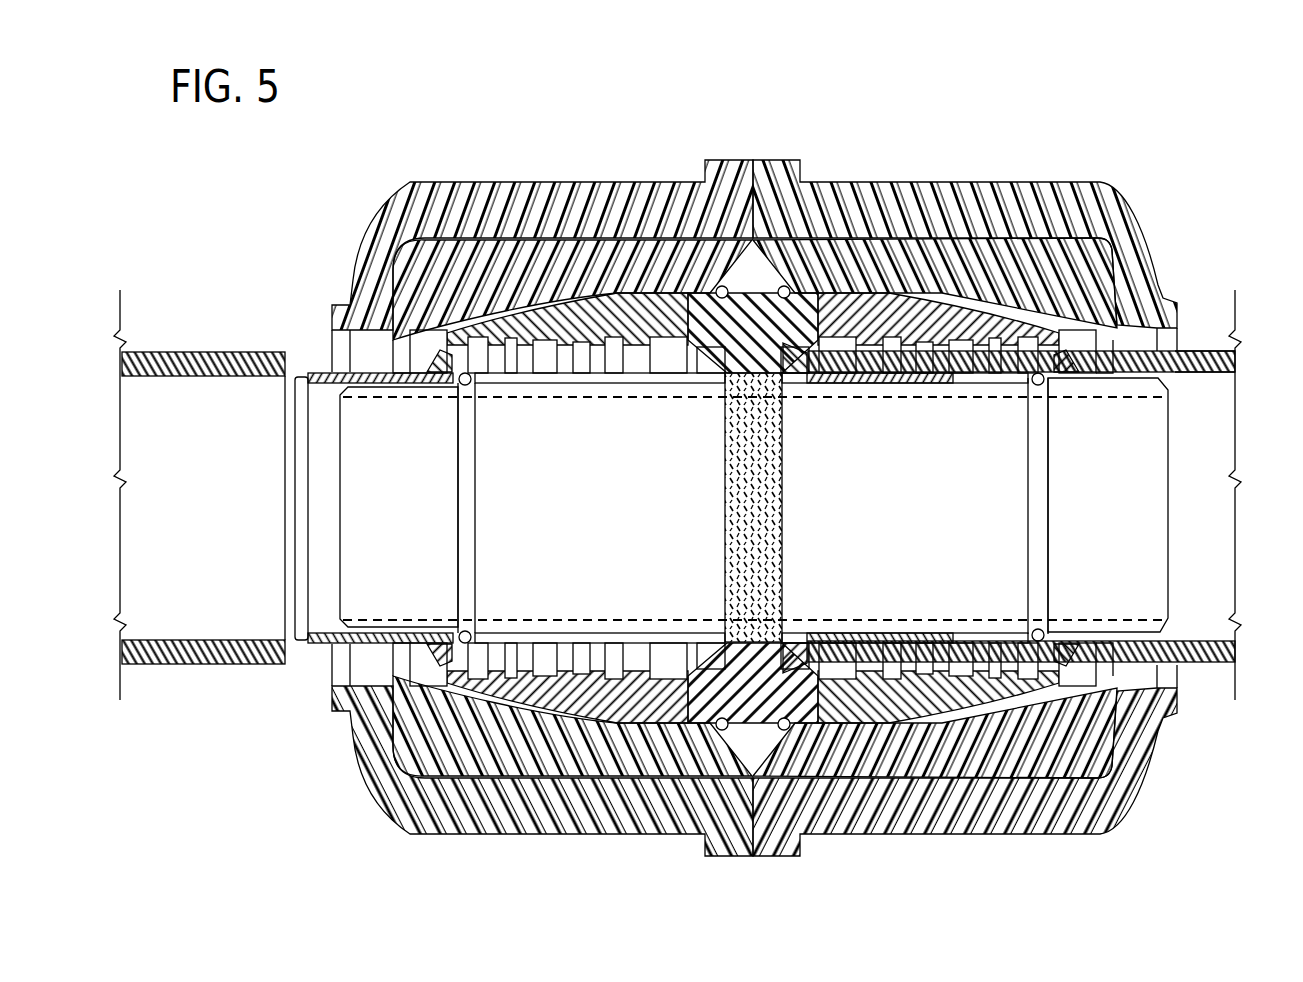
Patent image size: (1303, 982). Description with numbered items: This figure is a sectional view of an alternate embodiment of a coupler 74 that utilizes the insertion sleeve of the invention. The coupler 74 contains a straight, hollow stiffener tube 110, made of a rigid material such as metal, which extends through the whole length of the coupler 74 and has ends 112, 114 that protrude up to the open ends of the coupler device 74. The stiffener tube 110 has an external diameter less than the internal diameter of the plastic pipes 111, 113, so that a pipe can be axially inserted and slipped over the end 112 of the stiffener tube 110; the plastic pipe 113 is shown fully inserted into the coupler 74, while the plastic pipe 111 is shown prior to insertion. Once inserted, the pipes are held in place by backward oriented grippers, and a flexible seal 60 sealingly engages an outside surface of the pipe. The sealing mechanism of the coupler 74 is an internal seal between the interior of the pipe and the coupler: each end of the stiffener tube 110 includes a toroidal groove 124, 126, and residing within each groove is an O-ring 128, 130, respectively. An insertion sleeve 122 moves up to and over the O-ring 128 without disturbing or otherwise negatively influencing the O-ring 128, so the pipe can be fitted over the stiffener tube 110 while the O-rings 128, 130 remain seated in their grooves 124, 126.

The flexible seal 60 is at (943, 323).
The coupler 74 is at (777, 148).
The stiffener tube 110 is at (620, 534).
The plastic pipe 111 is at (203, 668).
The end of stiffener tube 112 is at (1170, 500).
The plastic pipe 113 is at (1192, 349).
The end of stiffener tube 114 is at (340, 452).
The insertion sleeve 122 is at (800, 627).
The toroidal groove 124 is at (1039, 544).
The toroidal groove 126 is at (462, 497).
The O-ring 128 is at (1033, 420).
The O-ring 130 is at (463, 400).